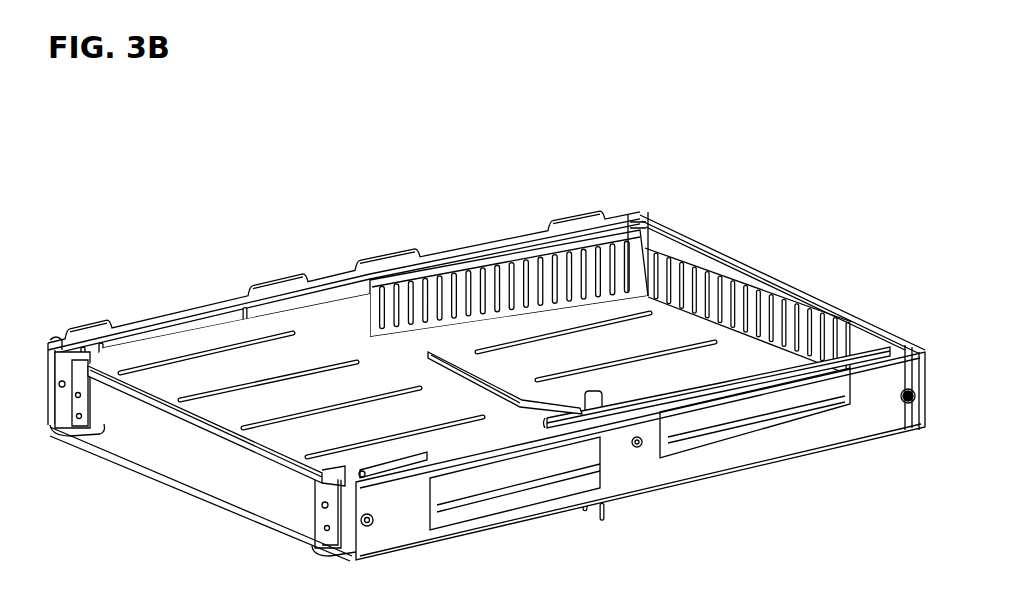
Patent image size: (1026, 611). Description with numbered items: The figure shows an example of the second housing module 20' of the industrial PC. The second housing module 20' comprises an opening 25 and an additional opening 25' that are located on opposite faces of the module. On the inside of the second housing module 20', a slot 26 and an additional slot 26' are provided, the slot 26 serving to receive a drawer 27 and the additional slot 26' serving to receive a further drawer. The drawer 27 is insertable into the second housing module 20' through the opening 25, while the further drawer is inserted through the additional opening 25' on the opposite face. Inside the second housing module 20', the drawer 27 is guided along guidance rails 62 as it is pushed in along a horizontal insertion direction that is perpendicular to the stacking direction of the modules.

The second housing module 20' is at (483, 367).
The opening 25 is at (782, 284).
The additional opening 25' is at (201, 494).
The slot 26 is at (506, 348).
The additional slot 26' is at (216, 454).
The drawer 27 is at (683, 258).
The guidance rails 62 is at (478, 262).